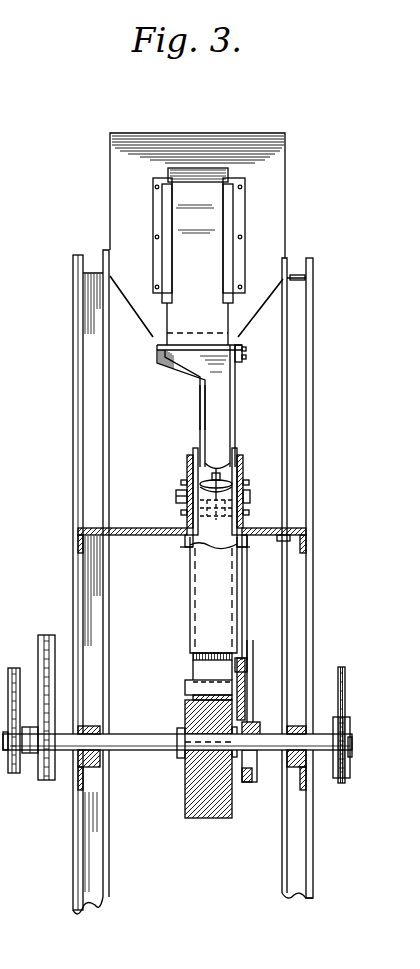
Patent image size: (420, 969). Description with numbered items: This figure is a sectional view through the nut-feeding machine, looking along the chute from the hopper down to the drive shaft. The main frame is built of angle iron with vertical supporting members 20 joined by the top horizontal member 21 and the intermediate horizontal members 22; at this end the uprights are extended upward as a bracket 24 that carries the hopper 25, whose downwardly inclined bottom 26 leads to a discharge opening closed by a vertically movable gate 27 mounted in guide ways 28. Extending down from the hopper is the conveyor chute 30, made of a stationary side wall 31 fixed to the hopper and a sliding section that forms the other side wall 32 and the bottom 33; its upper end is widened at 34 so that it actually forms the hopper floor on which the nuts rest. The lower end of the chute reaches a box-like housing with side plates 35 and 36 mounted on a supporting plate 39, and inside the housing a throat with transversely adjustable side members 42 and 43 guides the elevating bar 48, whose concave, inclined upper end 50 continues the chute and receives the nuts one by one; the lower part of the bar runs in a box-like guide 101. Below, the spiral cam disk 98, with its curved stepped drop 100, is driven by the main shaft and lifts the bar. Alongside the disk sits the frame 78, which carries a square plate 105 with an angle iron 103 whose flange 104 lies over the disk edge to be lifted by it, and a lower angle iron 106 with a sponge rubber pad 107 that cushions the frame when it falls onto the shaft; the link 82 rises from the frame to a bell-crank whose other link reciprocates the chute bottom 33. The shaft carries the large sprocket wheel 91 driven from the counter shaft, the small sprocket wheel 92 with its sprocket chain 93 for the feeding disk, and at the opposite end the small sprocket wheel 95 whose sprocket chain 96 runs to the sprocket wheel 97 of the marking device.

The hopper 25 is at (287, 186).
The guide ways 28 is at (227, 213).
The gate 27 is at (199, 313).
The bracket 24 is at (288, 285).
The vertical supporting members 20 is at (90, 872).
The widened upper end of chute 34 is at (197, 361).
The stationary side wall 31 is at (235, 388).
The conveyor chute 30 is at (238, 401).
The side wall 32 is at (202, 402).
The bottom 33 is at (212, 428).
The adjustable side member 42 is at (192, 451).
The adjustable side member 43 is at (245, 440).
The side plate 35 is at (187, 473).
The inclined concave upper end 50 is at (225, 478).
The side plate 36 is at (247, 494).
The top horizontal member 21 is at (95, 527).
The supporting plate 39 is at (155, 538).
The box-like guide 101 is at (193, 599).
The elevating bar 48 is at (200, 657).
The link 82 is at (263, 597).
The frame 78 is at (252, 657).
The angle iron 103 is at (258, 668).
The square plate 105 is at (238, 682).
The curved stepped portion 100 is at (188, 690).
The flange 104 is at (213, 700).
The spiral cam disk 98 is at (203, 810).
The sponge rubber pad 107 is at (260, 730).
The angle iron 106 is at (255, 722).
The intermediate horizontal members 22 is at (97, 767).
The large sprocket wheel 91 is at (55, 782).
The small sprocket wheel 92 is at (20, 775).
The sprocket chain 93 is at (17, 668).
The small sprocket wheel 95 is at (338, 784).
The sprocket chain 96 is at (340, 668).
The sprocket wheel 97 is at (10, 452).
The downwardly inclined bottom 26 is at (6, 594).